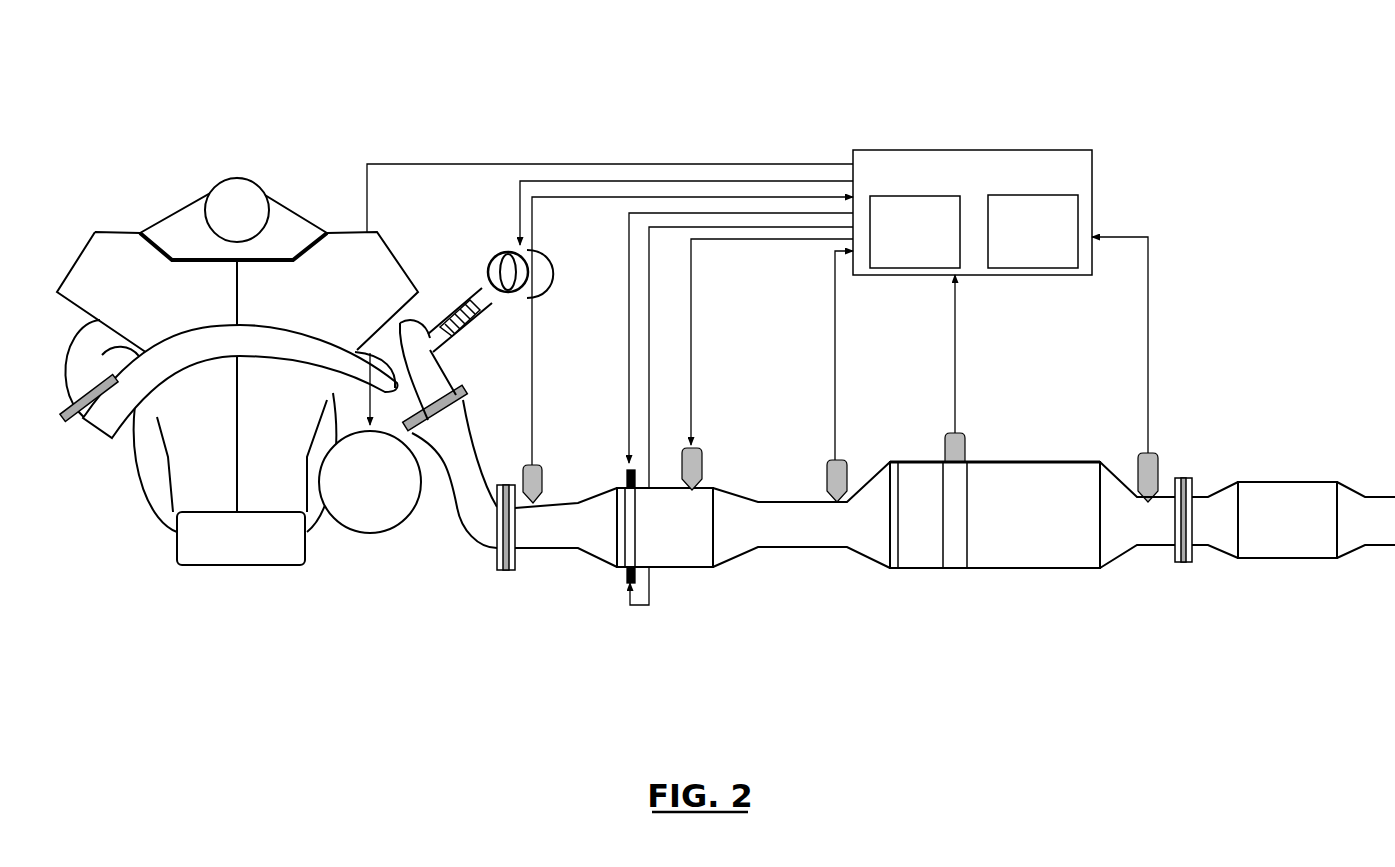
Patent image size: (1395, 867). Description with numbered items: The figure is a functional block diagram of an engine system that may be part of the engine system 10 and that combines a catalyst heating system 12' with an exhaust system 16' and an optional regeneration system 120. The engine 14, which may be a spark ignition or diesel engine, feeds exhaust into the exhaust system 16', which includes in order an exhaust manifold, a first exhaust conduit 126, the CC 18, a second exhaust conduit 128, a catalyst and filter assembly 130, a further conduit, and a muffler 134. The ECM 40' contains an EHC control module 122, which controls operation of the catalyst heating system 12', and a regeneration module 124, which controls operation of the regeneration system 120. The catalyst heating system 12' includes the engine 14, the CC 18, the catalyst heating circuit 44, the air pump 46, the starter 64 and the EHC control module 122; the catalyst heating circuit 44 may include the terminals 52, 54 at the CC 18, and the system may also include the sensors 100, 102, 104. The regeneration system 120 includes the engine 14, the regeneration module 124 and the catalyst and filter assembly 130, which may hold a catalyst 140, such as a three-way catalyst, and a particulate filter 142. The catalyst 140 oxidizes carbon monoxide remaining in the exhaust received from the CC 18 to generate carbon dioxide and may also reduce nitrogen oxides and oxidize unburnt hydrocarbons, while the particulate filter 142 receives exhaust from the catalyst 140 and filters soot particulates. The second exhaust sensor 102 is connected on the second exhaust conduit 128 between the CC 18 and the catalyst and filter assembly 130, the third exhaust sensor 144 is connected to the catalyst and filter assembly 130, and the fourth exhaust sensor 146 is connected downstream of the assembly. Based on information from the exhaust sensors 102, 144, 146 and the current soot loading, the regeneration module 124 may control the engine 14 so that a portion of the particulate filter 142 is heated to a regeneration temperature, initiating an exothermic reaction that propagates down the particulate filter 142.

The engine system 10 is at (143, 95).
The catalyst heating system 12' is at (1113, 106).
The engine 14 is at (112, 232).
The exhaust system 16' is at (441, 670).
The CC 18 is at (680, 567).
The ECM 40' is at (972, 185).
The catalyst heating circuit 44 is at (607, 392).
The air pump 46 is at (490, 255).
The terminal 52 is at (625, 468).
The terminal 54 is at (628, 573).
The starter 64 is at (372, 535).
The sensor 100 is at (530, 465).
The second flow, pressure and/or temperature exhaust sensor 102 is at (830, 462).
The sensor 104 is at (700, 450).
The regeneration system 120 is at (973, 600).
The EHC control module 122 is at (908, 196).
The regeneration module 124 is at (1047, 195).
The first exhaust conduit 126 is at (578, 548).
The second exhaust conduit 128 is at (795, 547).
The catalyst and filter assembly 130 is at (1030, 462).
The muffler 134 is at (1288, 482).
The catalyst 140 is at (878, 563).
The particulate filter 142 is at (1060, 550).
The third flow, pressure and/or temperature exhaust sensor 144 is at (945, 452).
The fourth flow, pressure and/or temperature exhaust sensor 146 is at (1138, 452).